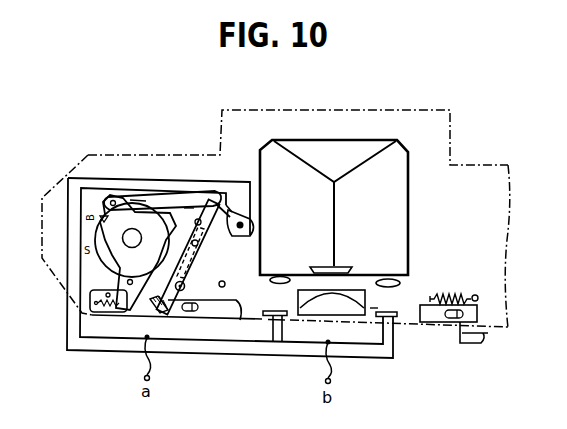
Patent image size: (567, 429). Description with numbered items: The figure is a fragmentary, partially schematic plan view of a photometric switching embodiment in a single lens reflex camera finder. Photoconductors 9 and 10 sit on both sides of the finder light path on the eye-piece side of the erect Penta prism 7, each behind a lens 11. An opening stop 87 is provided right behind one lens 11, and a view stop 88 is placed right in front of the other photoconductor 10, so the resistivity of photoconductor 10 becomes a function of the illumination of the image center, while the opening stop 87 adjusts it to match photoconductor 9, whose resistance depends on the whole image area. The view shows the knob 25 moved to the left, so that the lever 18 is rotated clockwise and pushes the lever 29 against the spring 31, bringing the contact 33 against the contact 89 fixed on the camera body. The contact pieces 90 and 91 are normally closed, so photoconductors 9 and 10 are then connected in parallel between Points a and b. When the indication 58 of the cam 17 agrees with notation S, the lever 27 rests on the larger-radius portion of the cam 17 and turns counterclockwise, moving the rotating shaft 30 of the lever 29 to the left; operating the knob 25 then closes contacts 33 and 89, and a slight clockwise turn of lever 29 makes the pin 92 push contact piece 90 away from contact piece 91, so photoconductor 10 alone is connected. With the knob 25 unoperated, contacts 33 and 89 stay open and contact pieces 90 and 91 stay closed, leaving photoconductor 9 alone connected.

The erect Penta prism 7 is at (403, 206).
The photoconductor 9 is at (267, 311).
The photoconductor 10 is at (394, 318).
The lens 11 is at (270, 279).
The cam 17 is at (138, 200).
The lever 18 is at (189, 208).
The knob 25 is at (475, 344).
The lever 27 is at (185, 288).
The lever 29 is at (208, 231).
The shaft 30 is at (190, 208).
The spring 31 is at (204, 276).
The contact 33 is at (230, 204).
The indicator 58 is at (102, 218).
The opening stop 87 is at (265, 287).
The view stop 88 is at (397, 296).
The contact 89 is at (252, 229).
The contact piece 90 is at (135, 252).
The contact piece 91 is at (173, 297).
The pin 92 is at (207, 302).